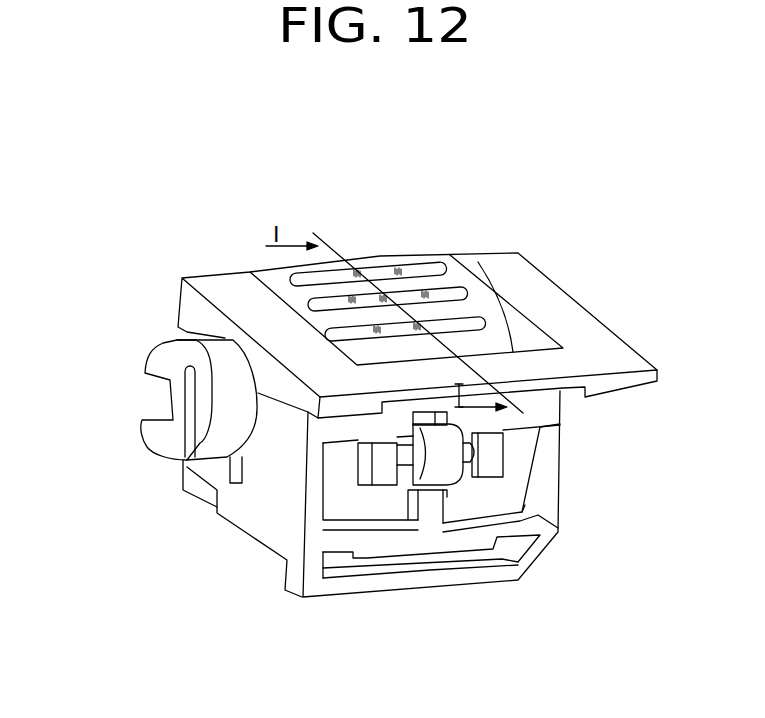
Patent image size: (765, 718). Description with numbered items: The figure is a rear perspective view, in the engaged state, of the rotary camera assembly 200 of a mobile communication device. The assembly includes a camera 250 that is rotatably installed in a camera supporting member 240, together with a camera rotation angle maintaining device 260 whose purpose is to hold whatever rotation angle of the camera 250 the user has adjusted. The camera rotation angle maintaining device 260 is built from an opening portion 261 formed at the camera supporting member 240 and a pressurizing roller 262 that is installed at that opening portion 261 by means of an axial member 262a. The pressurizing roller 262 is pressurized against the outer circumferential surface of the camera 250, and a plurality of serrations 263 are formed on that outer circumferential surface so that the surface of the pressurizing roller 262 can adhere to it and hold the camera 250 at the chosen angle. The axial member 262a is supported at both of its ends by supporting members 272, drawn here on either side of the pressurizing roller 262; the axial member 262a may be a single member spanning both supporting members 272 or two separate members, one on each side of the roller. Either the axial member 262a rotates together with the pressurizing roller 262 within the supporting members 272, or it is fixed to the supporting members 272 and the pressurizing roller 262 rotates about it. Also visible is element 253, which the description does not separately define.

The rotary camera assembly 200 is at (405, 144).
The camera supporting member 240 is at (565, 315).
The camera 250 is at (477, 295).
The locking clip 253 is at (167, 360).
The camera rotation angle maintaining device 260 is at (455, 490).
The opening portion 261 is at (397, 545).
The pressurizing roller 262 is at (443, 458).
The axial member 262a is at (463, 435).
The serrations 263 is at (447, 295).
The supporting members 272 is at (383, 463).